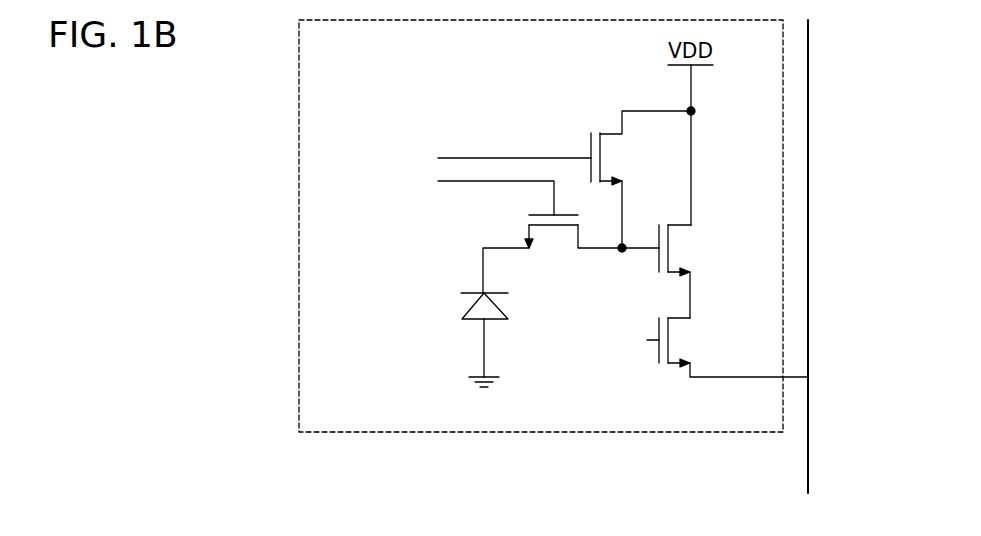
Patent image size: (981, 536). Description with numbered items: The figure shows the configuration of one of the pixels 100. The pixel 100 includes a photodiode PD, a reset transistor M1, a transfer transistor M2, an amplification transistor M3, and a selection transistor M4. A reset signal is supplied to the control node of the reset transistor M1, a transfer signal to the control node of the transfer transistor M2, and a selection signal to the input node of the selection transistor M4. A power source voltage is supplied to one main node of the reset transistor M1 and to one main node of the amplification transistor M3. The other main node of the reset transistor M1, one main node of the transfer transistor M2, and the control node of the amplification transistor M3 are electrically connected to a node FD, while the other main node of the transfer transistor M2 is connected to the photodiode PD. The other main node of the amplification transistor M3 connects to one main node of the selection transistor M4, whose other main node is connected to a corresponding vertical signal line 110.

The pixel 100 is at (299, 42).
The vertical signal line 110 is at (808, 463).
The reset transistor M1 is at (589, 149).
The transfer transistor M2 is at (544, 237).
The amplification transistor M3 is at (677, 242).
The selection transistor M4 is at (677, 337).
The photodiode PD is at (462, 319).
The node FD is at (621, 252).